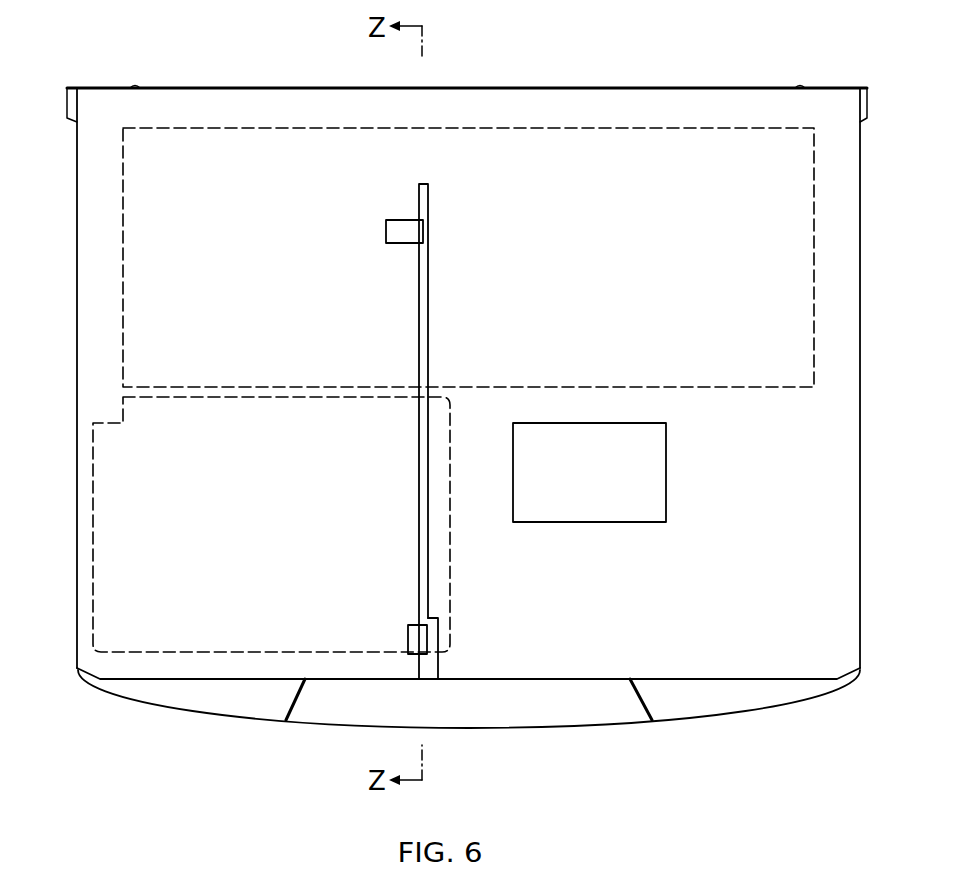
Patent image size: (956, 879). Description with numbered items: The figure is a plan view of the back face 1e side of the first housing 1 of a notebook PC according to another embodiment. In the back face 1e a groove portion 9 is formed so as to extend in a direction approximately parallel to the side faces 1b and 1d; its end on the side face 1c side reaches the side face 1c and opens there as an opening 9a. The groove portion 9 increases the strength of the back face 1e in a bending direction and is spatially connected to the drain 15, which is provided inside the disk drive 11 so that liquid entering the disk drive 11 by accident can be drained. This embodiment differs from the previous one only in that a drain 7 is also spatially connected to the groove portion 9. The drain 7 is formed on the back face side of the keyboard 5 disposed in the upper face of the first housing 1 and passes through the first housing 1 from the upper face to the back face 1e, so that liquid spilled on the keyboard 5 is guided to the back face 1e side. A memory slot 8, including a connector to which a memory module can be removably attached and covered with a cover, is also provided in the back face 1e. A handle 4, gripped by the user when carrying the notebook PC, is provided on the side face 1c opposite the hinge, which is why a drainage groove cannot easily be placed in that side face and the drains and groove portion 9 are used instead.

The first housing 1 is at (468, 400).
The side face 1b is at (859, 560).
The side face 1c is at (698, 681).
The side face 1d is at (78, 560).
The back face 1e is at (556, 122).
The handle 4 is at (575, 703).
The keyboard 5 is at (816, 316).
The drain 7 is at (403, 220).
The memory slot 8 is at (666, 488).
The groove portion 9 is at (476, 413).
The opening 9a is at (433, 682).
The disk drive 11 is at (93, 535).
The drain 15 is at (426, 682).